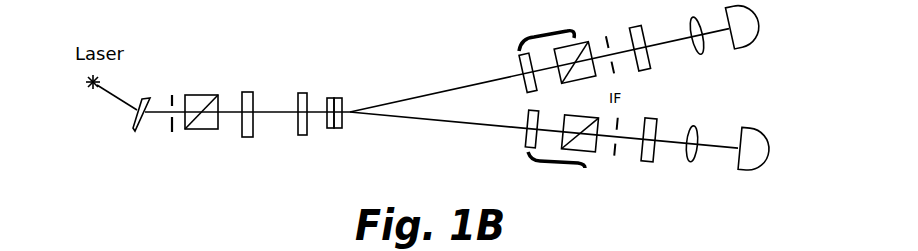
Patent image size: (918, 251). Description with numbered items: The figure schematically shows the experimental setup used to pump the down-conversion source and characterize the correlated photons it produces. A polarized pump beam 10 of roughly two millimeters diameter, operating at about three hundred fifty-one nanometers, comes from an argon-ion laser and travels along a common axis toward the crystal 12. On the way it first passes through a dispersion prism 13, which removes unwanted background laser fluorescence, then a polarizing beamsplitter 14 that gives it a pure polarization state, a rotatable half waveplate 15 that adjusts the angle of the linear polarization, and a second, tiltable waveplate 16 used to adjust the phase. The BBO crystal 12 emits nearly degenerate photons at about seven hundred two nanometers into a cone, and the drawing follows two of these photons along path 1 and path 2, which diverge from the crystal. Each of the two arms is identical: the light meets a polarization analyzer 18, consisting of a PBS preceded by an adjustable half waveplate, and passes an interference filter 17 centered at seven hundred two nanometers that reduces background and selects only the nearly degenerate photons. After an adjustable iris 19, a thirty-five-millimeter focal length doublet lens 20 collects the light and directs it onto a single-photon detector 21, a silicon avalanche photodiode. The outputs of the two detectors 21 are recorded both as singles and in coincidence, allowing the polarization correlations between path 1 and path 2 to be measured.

The path 1 is at (466, 82).
The path 2 is at (467, 128).
The polarized pump beam 10 is at (118, 99).
The crystal 12 is at (340, 128).
The dispersion prism 13 is at (137, 131).
The polarizing beamsplitter 14 is at (205, 131).
The half waveplate 15 is at (247, 138).
The tiltable waveplate 16 is at (303, 136).
The interference filter 17 is at (328, 129).
The polarization analyzer 18 is at (537, 33).
The iris 19 is at (601, 38).
The doublet lens 20 is at (691, 17).
The single-photon detector 21 is at (739, 8).